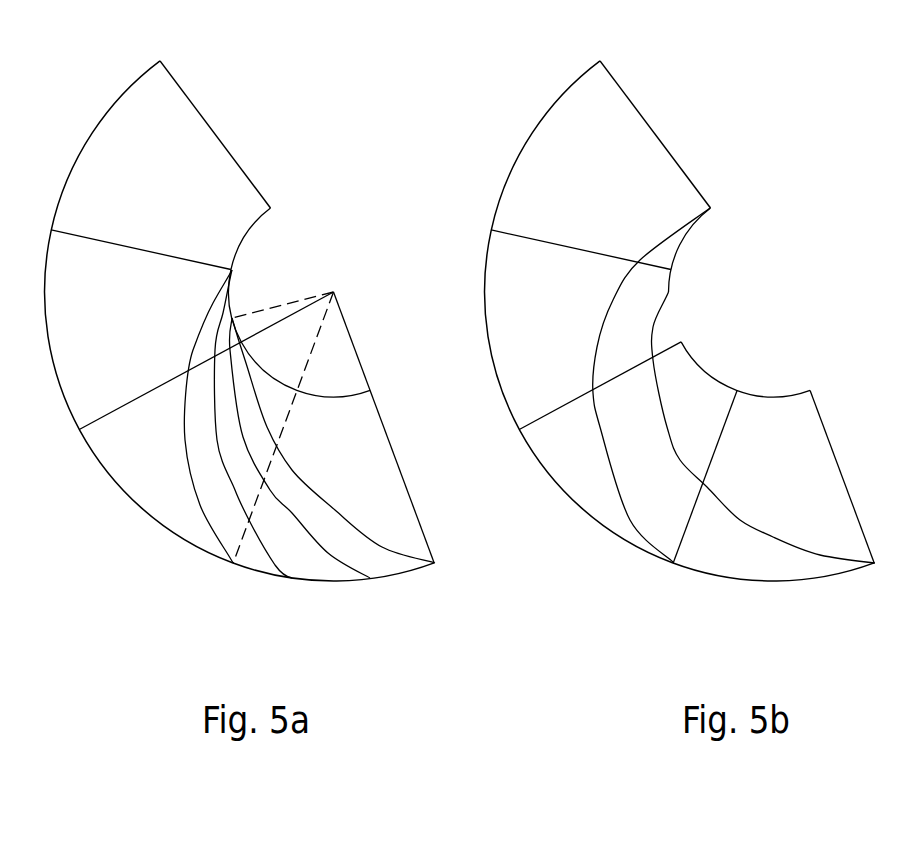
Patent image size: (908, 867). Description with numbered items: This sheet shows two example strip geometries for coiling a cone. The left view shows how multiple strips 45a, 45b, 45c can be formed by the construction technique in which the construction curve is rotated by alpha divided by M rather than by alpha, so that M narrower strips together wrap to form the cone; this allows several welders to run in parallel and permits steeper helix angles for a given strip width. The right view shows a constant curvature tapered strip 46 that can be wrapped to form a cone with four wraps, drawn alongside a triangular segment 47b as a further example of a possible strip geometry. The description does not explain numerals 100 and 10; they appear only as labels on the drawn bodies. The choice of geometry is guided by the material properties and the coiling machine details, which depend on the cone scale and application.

In FIG. 5A, the flat sector blank 100 is at (398, 463).
In FIG. 5A, the strip 45a is at (356, 558).
In FIG. 5A, the strip 45b is at (308, 566).
In FIG. 5A, the strip 45c is at (257, 559).
In FIG. 5B, the curved segment 10 is at (838, 460).
In FIG. 5B, the constant curvature tapered strip 46 is at (720, 557).
In FIG. 5B, the triangular segment 47b is at (780, 385).